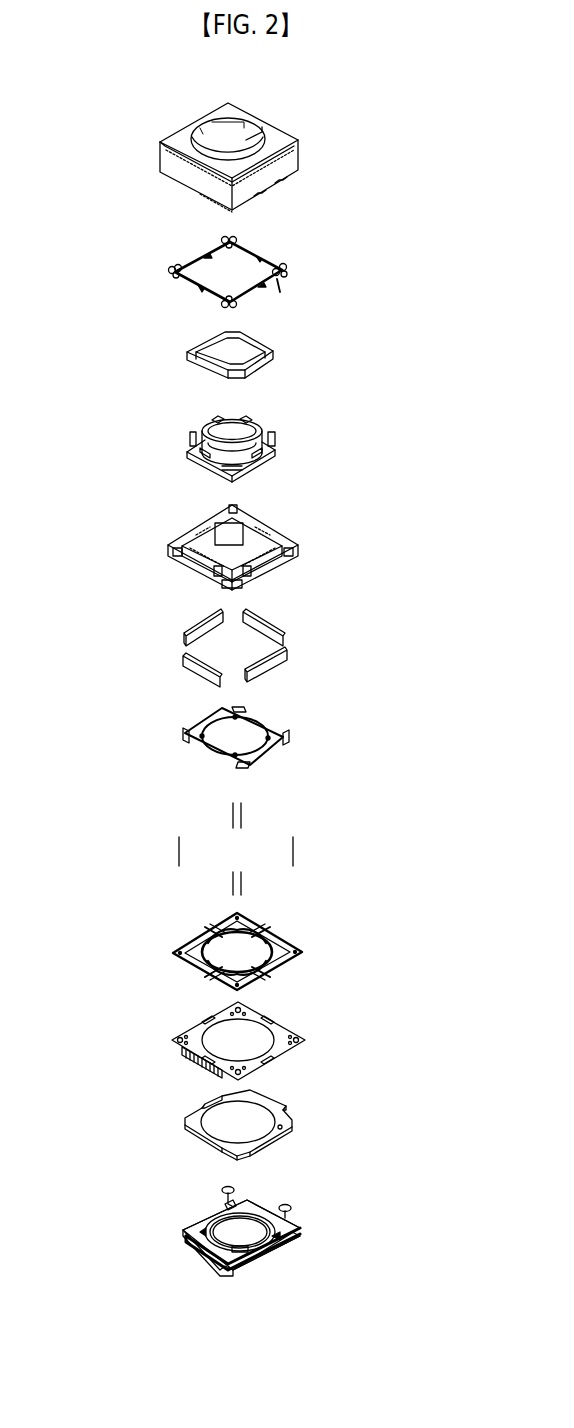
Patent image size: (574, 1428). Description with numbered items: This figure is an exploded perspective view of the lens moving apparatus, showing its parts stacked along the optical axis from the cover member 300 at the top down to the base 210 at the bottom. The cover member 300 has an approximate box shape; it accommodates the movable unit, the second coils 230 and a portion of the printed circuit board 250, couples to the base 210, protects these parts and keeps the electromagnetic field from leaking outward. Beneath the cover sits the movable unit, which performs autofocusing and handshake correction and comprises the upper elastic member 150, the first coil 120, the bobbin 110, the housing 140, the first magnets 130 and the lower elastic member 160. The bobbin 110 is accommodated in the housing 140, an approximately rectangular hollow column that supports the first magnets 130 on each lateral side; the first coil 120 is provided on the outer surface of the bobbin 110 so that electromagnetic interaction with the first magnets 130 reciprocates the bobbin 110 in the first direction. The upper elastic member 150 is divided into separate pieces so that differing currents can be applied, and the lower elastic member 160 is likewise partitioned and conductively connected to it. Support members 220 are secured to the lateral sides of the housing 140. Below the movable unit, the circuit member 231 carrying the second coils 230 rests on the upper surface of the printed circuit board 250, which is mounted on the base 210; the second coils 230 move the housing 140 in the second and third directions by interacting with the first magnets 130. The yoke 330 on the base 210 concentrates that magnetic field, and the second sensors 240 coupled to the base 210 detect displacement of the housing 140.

The cover member 300 is at (300, 158).
The upper elastic member 150 is at (283, 268).
The first coil 120 is at (273, 352).
The bobbin 110 is at (276, 442).
The housing 140 is at (280, 530).
The first magnets 130 is at (272, 622).
The lower elastic member 160 is at (284, 736).
The support members 220 is at (293, 840).
The second coils 230 is at (172, 953).
The circuit member 231 is at (303, 950).
The printed circuit board 250 is at (293, 1015).
The yoke 330 is at (287, 1107).
The base 210 is at (197, 1202).
The second sensors 240 is at (285, 1205).